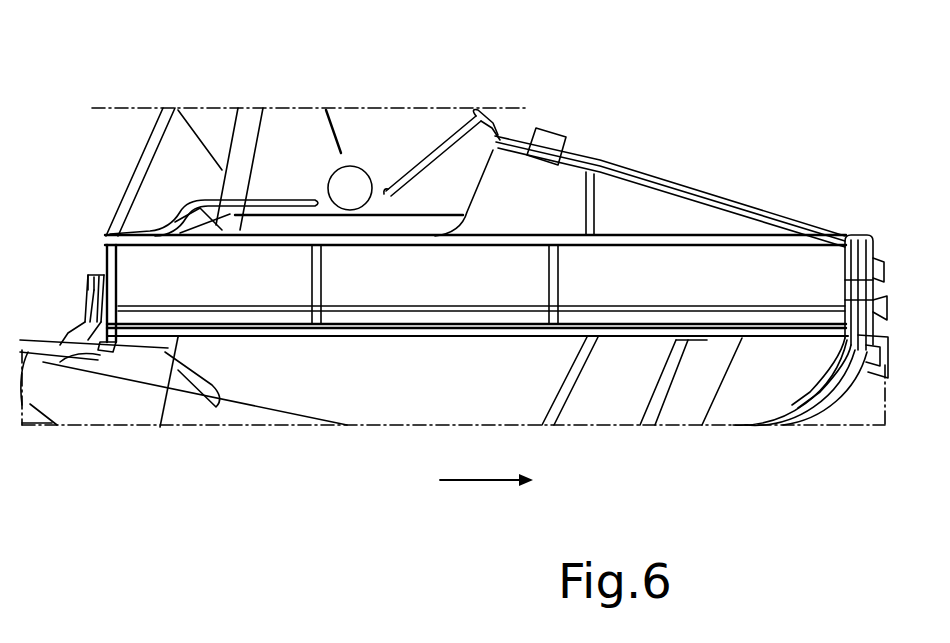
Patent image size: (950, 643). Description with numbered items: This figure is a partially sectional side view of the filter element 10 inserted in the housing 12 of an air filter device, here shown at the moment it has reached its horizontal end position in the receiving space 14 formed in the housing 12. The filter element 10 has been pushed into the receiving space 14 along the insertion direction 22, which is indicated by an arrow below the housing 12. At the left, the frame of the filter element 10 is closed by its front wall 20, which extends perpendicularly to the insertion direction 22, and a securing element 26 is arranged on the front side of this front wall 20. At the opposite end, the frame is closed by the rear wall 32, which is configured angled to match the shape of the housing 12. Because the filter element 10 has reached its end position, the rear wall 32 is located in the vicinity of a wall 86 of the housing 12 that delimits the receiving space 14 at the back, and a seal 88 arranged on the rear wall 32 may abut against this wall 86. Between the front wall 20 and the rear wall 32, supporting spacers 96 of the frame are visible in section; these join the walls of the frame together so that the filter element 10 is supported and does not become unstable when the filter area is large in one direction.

The housing 12 is at (271, 94).
The filter element 10 is at (104, 241).
The front wall 20 is at (102, 266).
The securing element 26 is at (76, 303).
The receiving space 14 is at (550, 224).
The supporting spacers 96 is at (317, 325).
The rear wall 32 is at (855, 233).
The wall 86 is at (877, 270).
The seal 88 is at (873, 300).
The insertion direction 22 is at (488, 483).